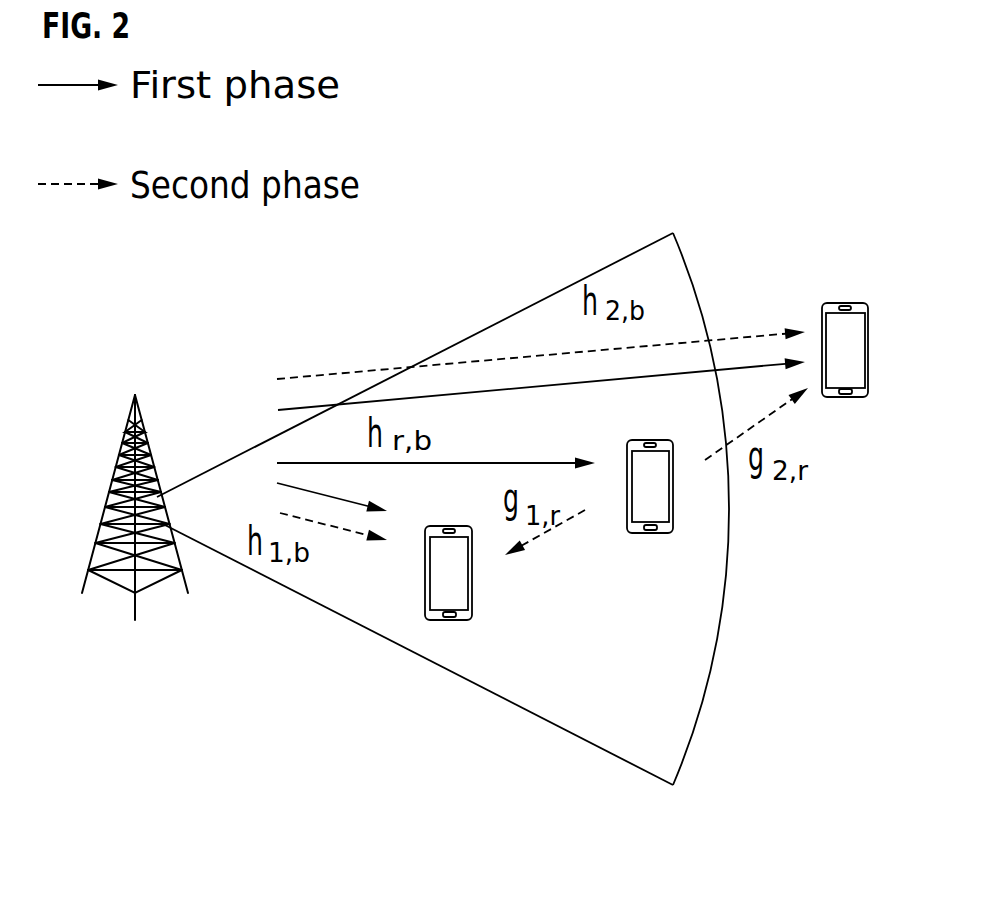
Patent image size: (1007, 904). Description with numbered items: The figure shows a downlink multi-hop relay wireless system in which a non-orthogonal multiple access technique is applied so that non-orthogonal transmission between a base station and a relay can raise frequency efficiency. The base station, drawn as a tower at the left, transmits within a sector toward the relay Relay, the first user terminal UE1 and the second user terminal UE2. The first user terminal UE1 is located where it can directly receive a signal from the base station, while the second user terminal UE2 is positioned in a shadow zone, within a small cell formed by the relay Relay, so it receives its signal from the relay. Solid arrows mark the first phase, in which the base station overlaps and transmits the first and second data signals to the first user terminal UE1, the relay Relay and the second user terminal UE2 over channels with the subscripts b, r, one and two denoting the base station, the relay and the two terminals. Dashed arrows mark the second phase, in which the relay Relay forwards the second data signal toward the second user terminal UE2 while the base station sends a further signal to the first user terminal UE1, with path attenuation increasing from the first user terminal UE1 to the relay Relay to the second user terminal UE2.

The first user terminal UE1 is at (448, 599).
The second user terminal UE2 is at (842, 376).
The relay Relay is at (650, 512).